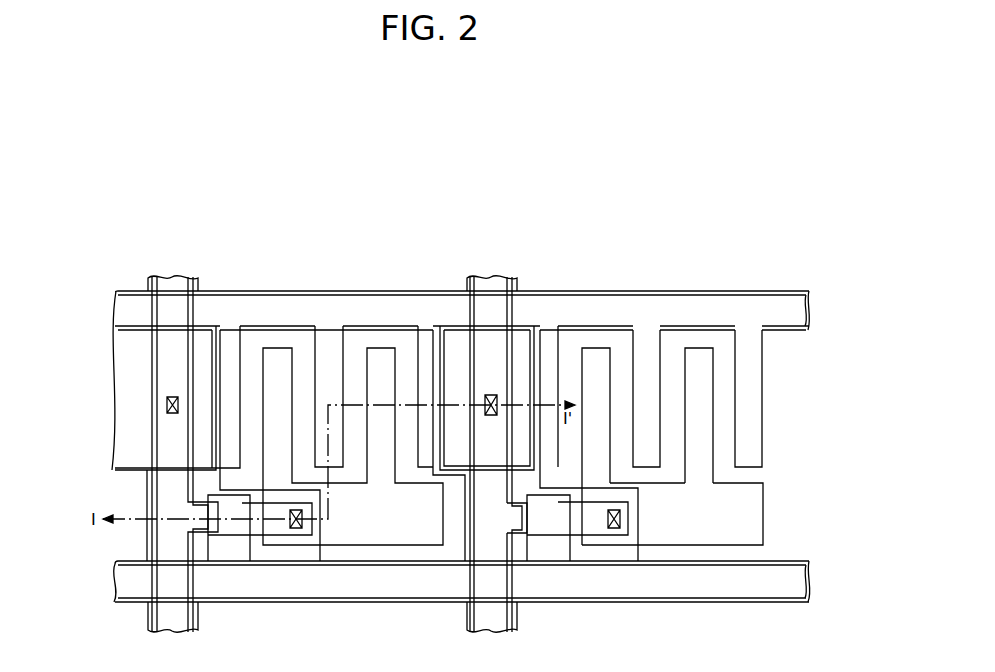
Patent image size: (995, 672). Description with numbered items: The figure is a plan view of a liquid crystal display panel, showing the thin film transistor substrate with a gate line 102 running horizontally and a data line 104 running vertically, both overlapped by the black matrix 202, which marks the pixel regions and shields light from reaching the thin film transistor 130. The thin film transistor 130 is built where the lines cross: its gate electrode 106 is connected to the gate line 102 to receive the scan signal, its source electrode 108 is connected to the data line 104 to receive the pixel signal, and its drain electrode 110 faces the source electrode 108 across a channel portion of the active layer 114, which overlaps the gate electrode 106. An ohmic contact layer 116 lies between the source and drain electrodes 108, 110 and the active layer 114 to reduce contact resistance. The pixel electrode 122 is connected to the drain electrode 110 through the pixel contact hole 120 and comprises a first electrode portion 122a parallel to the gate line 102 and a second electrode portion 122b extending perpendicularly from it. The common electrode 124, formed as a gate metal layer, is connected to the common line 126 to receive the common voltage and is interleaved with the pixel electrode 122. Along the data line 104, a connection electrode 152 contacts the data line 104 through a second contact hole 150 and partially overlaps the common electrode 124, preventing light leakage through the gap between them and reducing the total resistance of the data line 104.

The gate line 102 is at (810, 582).
The data line 104 is at (167, 438).
The gate electrode 106 is at (547, 548).
The source electrode 108 is at (520, 517).
The drain electrode 110 is at (588, 525).
The active layer 114 is at (153, 487).
The ohmic contact layer 116 is at (203, 454).
The pixel contact hole 120 is at (620, 520).
The pixel electrode 122 is at (738, 446).
The first electrode portion 122a is at (760, 505).
The second electrode portion 122b is at (708, 437).
The common electrode 124 is at (230, 364).
The common line 126 is at (113, 310).
The thin film transistor 130 is at (245, 482).
The second contact hole 150 is at (492, 393).
The connection electrode 152 is at (458, 326).
The black matrix 202 is at (354, 291).